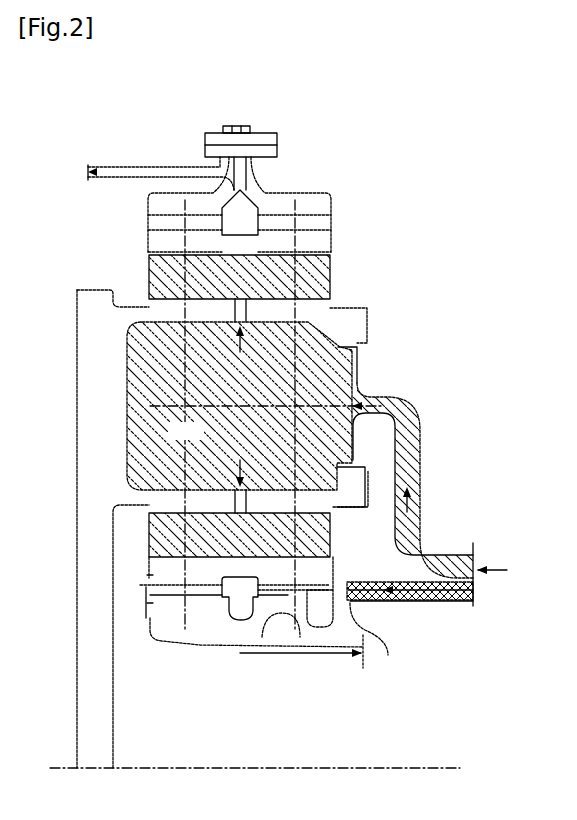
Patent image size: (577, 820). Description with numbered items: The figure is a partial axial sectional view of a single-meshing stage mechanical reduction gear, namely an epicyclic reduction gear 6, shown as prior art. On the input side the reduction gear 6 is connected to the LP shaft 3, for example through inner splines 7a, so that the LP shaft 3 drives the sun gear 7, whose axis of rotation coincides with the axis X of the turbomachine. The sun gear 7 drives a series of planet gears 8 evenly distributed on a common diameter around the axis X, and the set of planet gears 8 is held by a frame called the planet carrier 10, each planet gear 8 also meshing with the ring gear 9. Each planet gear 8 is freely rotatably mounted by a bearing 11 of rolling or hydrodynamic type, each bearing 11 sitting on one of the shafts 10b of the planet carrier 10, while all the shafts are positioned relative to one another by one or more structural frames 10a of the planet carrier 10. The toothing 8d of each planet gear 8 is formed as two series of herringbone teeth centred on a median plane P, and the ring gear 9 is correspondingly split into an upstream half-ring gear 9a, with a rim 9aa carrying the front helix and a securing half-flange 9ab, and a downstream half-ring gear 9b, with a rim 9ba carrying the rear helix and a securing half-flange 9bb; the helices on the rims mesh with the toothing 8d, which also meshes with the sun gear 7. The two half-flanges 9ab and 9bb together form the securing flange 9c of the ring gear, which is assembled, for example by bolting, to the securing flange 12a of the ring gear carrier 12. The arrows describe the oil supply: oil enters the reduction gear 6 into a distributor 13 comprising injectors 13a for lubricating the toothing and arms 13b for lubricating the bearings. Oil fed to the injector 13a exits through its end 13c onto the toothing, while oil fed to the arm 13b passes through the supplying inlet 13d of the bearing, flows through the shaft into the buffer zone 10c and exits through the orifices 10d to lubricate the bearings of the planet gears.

The LP shaft 3 is at (337, 650).
The epicyclic reduction gear 6 is at (442, 261).
The sun gear 7 is at (147, 607).
The inner splines 7a is at (222, 640).
The planet gears 8 is at (143, 578).
The toothing of planet gear 8d is at (143, 587).
The ring gear 9 is at (243, 189).
The upstream half-ring gear 9a is at (157, 203).
The rim of upstream half-ring gear 9aa is at (168, 195).
The securing half-flange of upstream half-ring gear 9ab is at (232, 126).
The downstream half-ring gear 9b is at (322, 209).
The rim of downstream half-ring gear 9ba is at (287, 195).
The securing half-flange of downstream half-ring gear 9bb is at (247, 126).
The securing flange of the ring gear 9c is at (211, 84).
The planet carrier 10 is at (355, 308).
The structural frame of planet carrier 10a is at (84, 367).
The shaft of planet carrier 10b is at (373, 487).
The buffer zone 10c is at (206, 441).
The orifices 10d is at (250, 306).
The bearing 11 is at (333, 275).
The ring gear carrier 12 is at (117, 167).
The securing flange of the ring gear carrier 12a is at (222, 133).
The distributor 13 is at (426, 497).
The injector 13a is at (430, 600).
The arm 13b is at (412, 457).
The end of the injector 13c is at (318, 651).
The supplying inlet of the bearing 13d is at (358, 385).
The median plane P is at (160, 630).
The axis of rotation of the turbomachine X is at (255, 747).